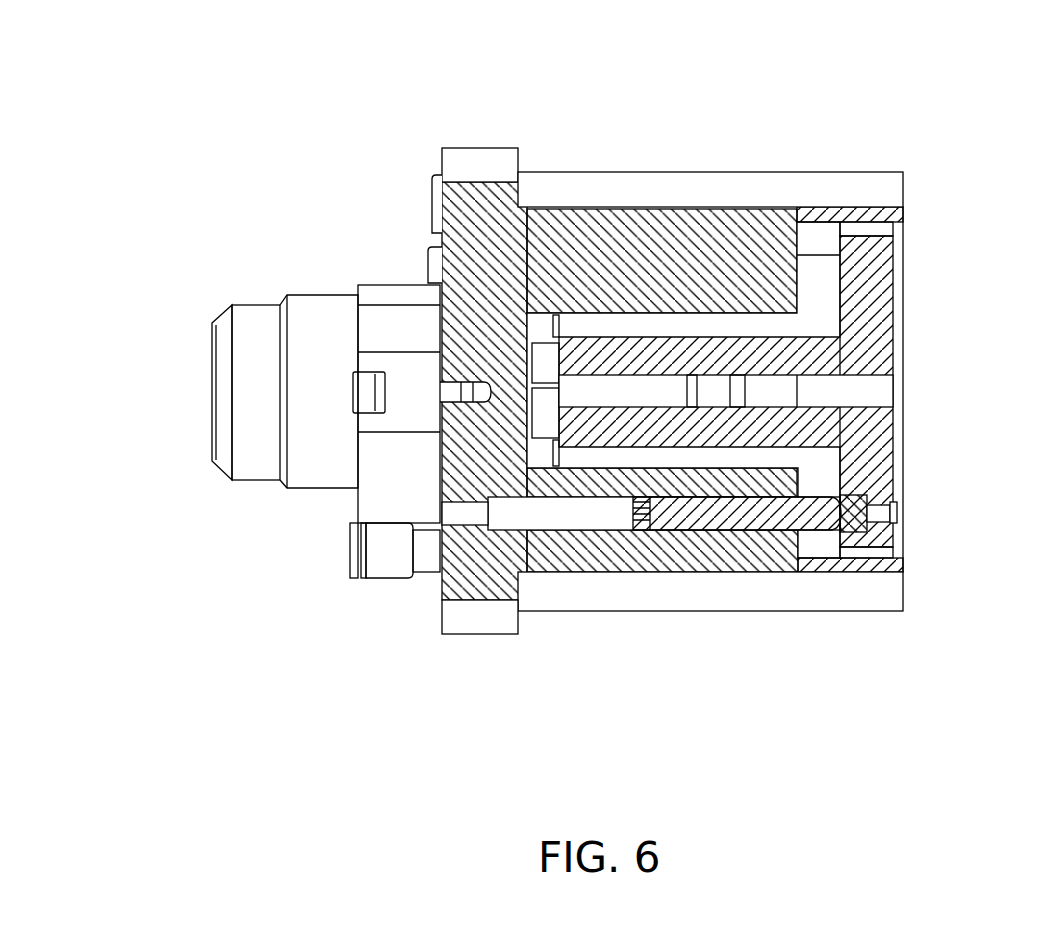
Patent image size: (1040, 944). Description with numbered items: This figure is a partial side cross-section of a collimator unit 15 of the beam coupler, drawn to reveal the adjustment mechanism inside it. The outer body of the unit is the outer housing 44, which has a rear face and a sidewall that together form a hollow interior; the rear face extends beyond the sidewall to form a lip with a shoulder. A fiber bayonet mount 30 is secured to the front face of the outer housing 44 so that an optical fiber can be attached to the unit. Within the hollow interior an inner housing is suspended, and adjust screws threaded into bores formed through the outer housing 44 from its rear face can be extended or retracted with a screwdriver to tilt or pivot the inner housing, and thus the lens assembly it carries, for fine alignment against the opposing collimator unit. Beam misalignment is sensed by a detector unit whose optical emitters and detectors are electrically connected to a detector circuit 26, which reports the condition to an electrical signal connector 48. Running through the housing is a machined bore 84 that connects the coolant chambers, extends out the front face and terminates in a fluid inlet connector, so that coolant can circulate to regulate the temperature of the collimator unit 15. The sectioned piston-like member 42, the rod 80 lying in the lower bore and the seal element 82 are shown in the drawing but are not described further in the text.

The input collimator unit 15 is at (658, 697).
The detector circuit 26 is at (350, 554).
The fiber bayonet mount 30 is at (245, 316).
The piston 42 is at (893, 297).
The outer housing 44 is at (642, 172).
The electrical signal connector 48 is at (433, 177).
The rod 80 is at (697, 515).
The seal 82 is at (427, 265).
The machined bore 84 is at (857, 512).